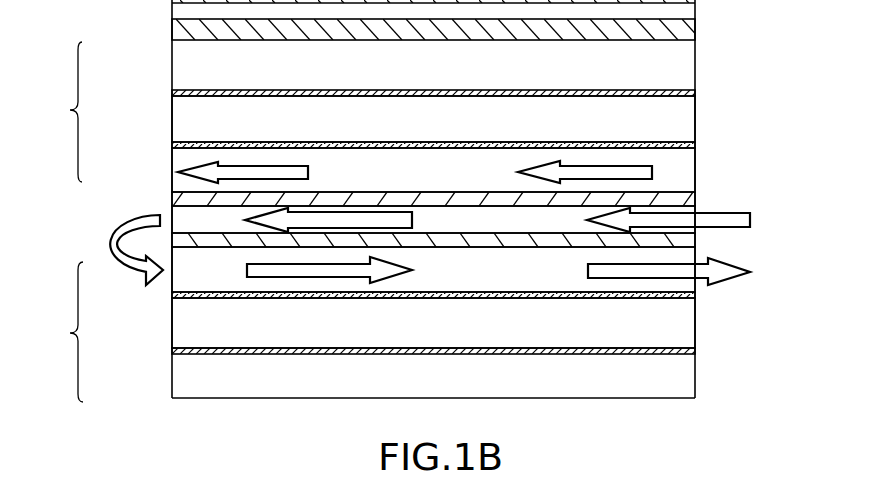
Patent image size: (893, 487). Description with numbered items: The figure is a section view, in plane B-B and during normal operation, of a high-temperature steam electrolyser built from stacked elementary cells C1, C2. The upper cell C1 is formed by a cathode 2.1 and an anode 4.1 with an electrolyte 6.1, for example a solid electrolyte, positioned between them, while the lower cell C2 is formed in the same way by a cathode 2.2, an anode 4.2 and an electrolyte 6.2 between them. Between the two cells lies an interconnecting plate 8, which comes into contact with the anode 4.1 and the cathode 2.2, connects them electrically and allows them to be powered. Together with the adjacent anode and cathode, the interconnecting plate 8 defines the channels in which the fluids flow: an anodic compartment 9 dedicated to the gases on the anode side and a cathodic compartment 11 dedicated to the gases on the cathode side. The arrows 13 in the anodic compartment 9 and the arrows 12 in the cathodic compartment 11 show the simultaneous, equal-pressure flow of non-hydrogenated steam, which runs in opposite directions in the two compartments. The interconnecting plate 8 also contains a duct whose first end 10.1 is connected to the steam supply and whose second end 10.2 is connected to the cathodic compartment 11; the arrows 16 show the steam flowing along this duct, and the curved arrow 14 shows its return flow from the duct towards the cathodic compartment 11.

The interconnecting plate 8 is at (465, 220).
The elementary cell C1 is at (59, 112).
The elementary cell C2 is at (57, 332).
The cathode 2.1 is at (172, 91).
The electrolyte 6.1 is at (187, 122).
The anode 4.1 is at (172, 147).
The anodic compartment 9 is at (447, 182).
The arrow 13 is at (227, 173).
The first end of duct 10.1 is at (695, 208).
The second end of duct 10.2 is at (187, 219).
The arrows 16 is at (363, 220).
The cathodic compartment 11 is at (505, 281).
The arrow 12 is at (320, 268).
The cathode 2.2 is at (172, 297).
The electrolyte 6.2 is at (683, 323).
The anode 4.2 is at (172, 352).
The arrow 14 is at (110, 252).